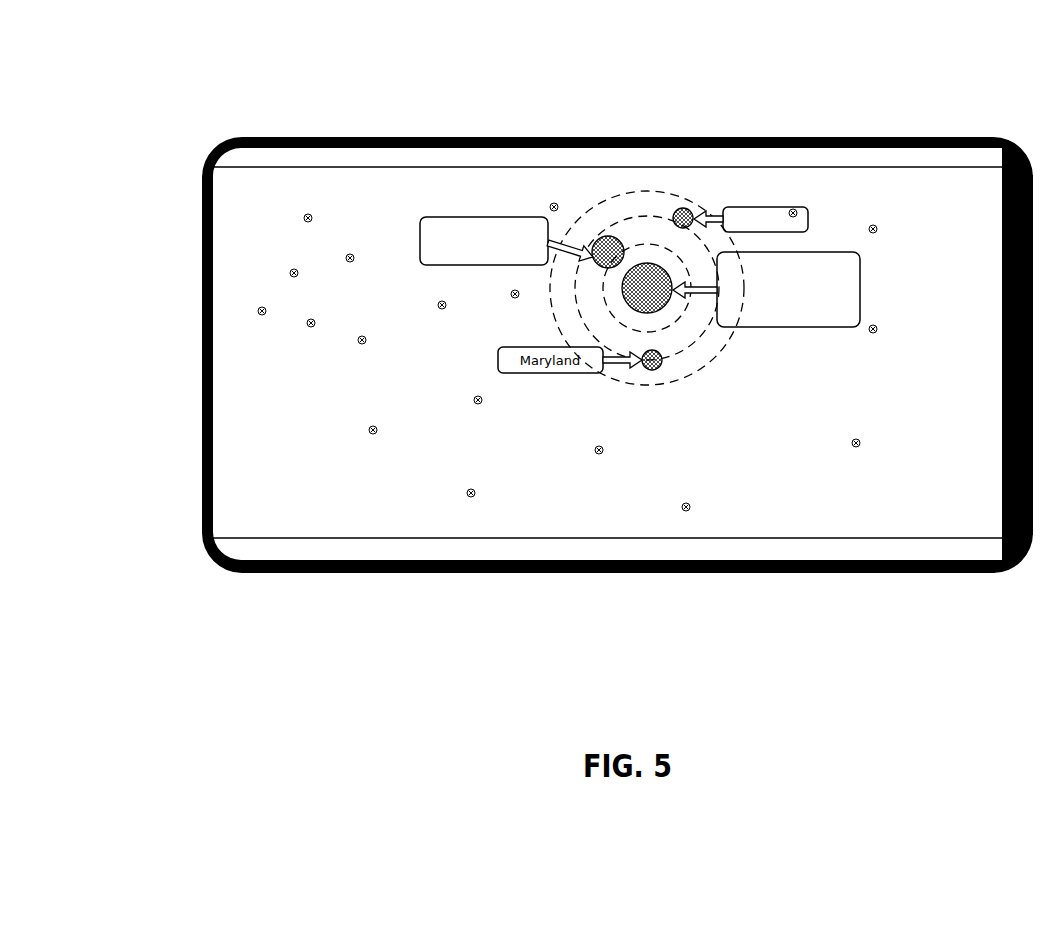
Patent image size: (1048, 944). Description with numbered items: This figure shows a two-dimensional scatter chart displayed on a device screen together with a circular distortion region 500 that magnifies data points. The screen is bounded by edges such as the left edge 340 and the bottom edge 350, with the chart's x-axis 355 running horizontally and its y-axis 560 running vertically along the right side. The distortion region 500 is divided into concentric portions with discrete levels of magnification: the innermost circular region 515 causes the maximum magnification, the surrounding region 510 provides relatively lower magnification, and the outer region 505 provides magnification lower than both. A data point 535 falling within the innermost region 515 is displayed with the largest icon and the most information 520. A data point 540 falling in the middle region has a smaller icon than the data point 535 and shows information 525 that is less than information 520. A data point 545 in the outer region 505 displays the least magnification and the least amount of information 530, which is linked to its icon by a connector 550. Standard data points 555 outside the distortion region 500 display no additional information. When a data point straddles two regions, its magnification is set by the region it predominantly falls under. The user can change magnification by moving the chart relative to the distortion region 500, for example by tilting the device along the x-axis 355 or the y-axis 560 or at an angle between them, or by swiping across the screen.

The left edge 340 is at (202, 366).
The bottom edge 350 is at (350, 573).
The x-axis 355 is at (672, 538).
The distortion region 500 is at (648, 380).
The outer region 505 is at (563, 283).
The middle region 510 is at (595, 300).
The innermost circular region 515 is at (622, 307).
The information for data point 520 is at (797, 252).
The information for data point 525 is at (483, 217).
The information for data point 530 is at (762, 207).
The data point 535 is at (650, 313).
The data point 540 is at (608, 236).
The data point 545 is at (682, 208).
The connector arrow 550 is at (712, 215).
The standard data points 555 is at (373, 436).
The y-axis 560 is at (1000, 312).